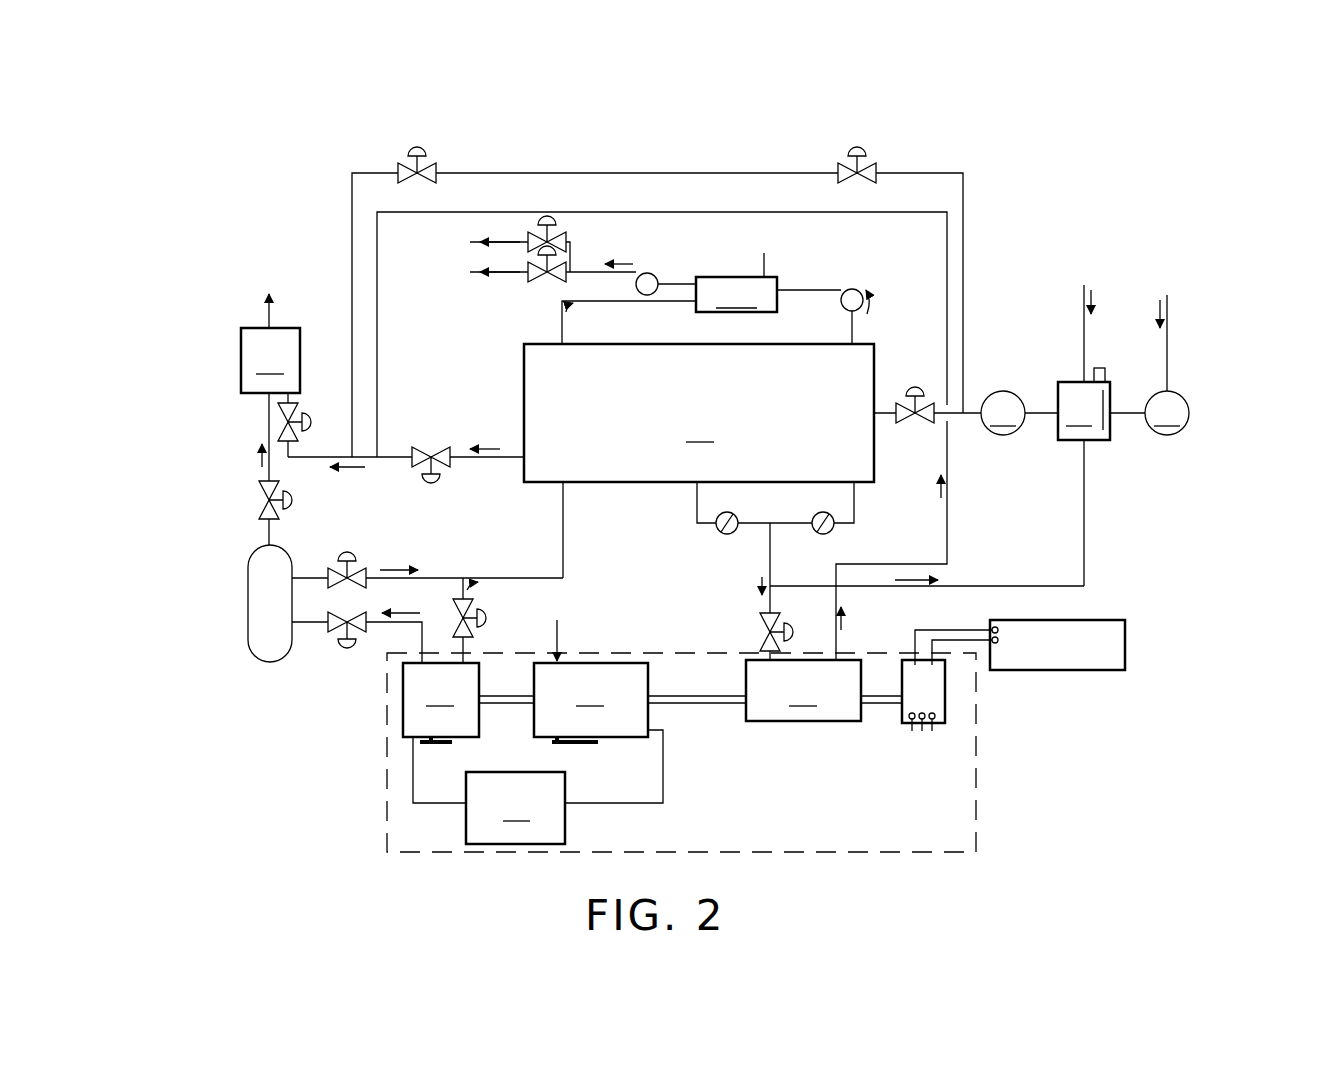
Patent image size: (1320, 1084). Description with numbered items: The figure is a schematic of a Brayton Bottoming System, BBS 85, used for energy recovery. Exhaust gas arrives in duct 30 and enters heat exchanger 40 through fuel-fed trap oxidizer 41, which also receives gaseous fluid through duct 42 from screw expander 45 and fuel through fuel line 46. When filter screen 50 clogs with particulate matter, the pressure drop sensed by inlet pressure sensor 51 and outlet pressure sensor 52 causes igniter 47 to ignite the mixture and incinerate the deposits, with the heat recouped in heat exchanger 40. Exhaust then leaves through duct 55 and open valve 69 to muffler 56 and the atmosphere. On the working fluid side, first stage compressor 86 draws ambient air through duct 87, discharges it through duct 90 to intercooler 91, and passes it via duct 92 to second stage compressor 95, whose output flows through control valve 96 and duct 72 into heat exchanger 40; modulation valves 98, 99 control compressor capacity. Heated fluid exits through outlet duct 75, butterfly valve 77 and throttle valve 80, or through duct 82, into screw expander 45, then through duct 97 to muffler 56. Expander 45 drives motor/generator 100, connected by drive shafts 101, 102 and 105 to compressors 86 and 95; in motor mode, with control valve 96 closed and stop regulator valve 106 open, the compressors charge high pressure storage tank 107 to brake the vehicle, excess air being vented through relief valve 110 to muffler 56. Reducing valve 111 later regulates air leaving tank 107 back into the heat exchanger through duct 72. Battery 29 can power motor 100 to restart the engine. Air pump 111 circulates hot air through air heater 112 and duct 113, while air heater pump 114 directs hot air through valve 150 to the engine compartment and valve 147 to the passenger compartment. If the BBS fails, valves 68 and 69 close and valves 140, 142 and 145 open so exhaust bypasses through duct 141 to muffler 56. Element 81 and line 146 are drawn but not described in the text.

The duct 141 is at (695, 172).
The valve 142 is at (428, 180).
The valve 140 is at (875, 180).
The duct 97 is at (758, 212).
The duct 55 is at (502, 459).
The valve 69 is at (431, 442).
The valve 145 is at (298, 412).
The muffler 56 is at (260, 371).
The relief valve 110 is at (258, 493).
The high pressure storage tank 107 is at (262, 622).
The air pump / air outlet valve 111 is at (360, 566).
The stop regulator valve 106 is at (355, 612).
The duct 72 is at (565, 565).
The control valve 96 is at (470, 608).
The duct 87 is at (559, 633).
The heat exchanger 40 is at (699, 413).
The duct 113 is at (610, 302).
The air heater 112 is at (768, 294).
The line 146 is at (764, 262).
The air heater pump 114 is at (655, 276).
The valve 147 is at (536, 282).
The valve 150 is at (560, 235).
The valve 68 is at (915, 427).
The outlet pressure sensor 52 is at (1019, 413).
The trap oxidizer 41 is at (1101, 411).
The igniter 47 is at (1100, 367).
The inlet pressure sensor 51 is at (1167, 413).
The duct 30 is at (1167, 355).
The fuel line 46 is at (1083, 322).
The filter screen 50 is at (1100, 430).
The duct 42 is at (1084, 558).
The outlet duct 75 is at (697, 500).
The duct 82 is at (855, 500).
The butterfly valve 77 is at (722, 534).
The sensor 81 is at (815, 534).
The throttle valve 80 is at (760, 628).
The screw expander 45 is at (803, 664).
The BBS 85 is at (976, 806).
The duct 92 is at (387, 778).
The second stage high-pressure gaseous fluid compressor 95 is at (441, 700).
The first stage high-pressure gaseous fluid compressor 86 is at (591, 700).
The drive shaft 105 is at (507, 706).
The drive shaft 102 is at (720, 706).
The drive shaft 101 is at (876, 706).
The motor/generator 100 is at (940, 728).
The battery 29 is at (1100, 671).
The modulation valve 99 is at (433, 746).
The modulation valve 98 is at (580, 746).
The duct 90 is at (663, 775).
The intercooler 91 is at (515, 808).